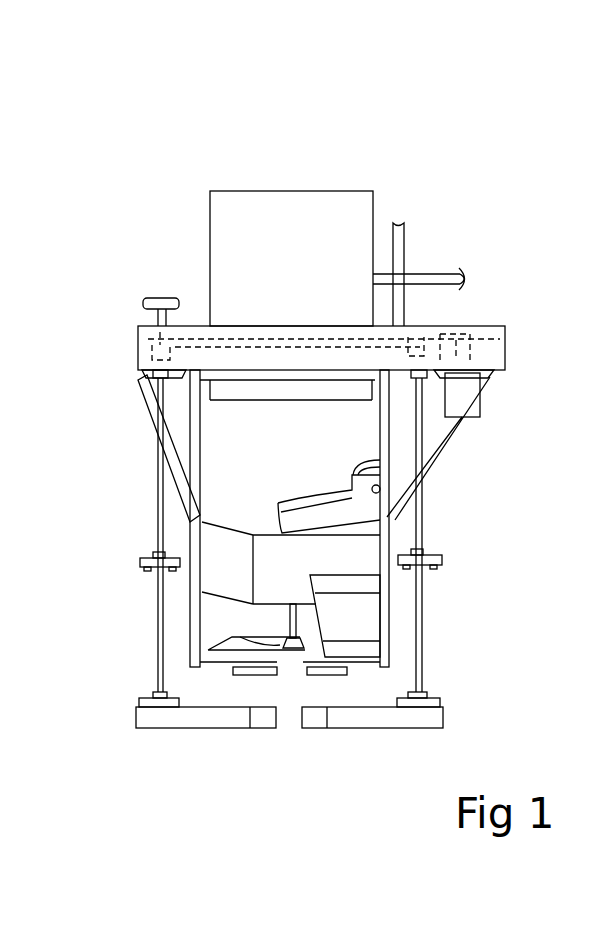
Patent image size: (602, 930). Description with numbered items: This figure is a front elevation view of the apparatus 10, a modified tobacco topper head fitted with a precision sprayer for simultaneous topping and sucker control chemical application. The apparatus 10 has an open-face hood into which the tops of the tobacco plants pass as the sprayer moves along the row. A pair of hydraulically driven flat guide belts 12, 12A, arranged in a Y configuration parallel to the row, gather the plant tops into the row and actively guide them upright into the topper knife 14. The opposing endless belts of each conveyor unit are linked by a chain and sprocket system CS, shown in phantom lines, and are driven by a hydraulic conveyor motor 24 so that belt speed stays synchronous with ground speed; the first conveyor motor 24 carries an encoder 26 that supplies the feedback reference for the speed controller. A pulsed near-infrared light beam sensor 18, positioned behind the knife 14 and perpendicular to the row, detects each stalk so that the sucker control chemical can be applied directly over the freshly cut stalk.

The apparatus 10 is at (361, 118).
The encoder 26 is at (158, 298).
The chain and sprocket system CS is at (197, 352).
The hydraulic conveyor motor 24 is at (464, 397).
The topper knife 14 is at (232, 637).
The sensor 18 is at (233, 672).
The flat belt 12 is at (165, 720).
The flat belt 12A is at (365, 720).